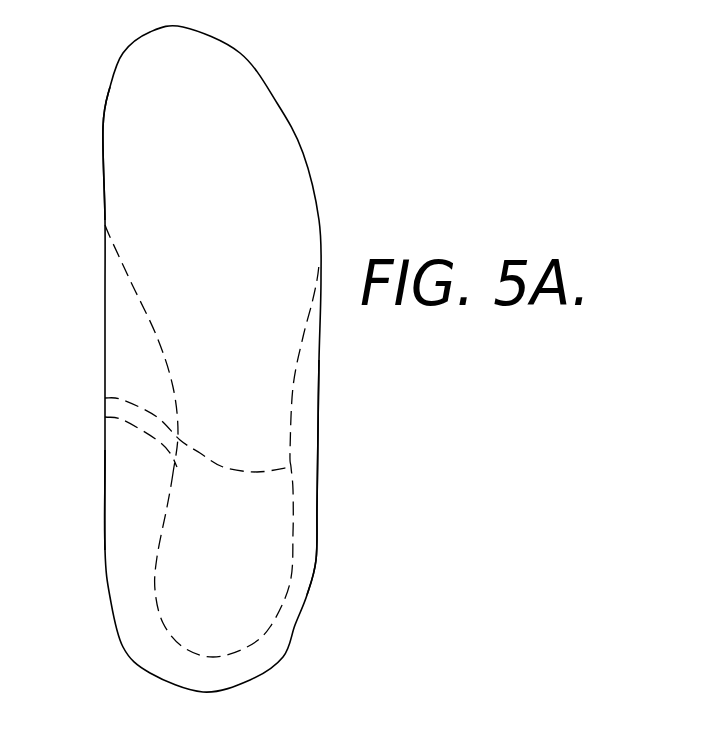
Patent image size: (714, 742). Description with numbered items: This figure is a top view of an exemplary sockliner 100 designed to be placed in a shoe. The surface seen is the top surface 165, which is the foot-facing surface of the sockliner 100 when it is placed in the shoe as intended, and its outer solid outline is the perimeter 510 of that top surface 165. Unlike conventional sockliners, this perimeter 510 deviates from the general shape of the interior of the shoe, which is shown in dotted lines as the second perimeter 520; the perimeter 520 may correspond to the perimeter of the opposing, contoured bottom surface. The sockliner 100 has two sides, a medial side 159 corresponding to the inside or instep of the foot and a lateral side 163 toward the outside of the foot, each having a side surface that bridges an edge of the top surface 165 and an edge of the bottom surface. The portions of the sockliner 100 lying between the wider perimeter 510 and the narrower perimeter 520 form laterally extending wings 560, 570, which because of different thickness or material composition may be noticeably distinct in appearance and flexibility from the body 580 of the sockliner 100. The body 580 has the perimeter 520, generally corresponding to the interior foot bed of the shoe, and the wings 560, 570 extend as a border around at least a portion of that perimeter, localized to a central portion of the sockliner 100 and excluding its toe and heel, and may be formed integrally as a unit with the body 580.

The sockliner 100 is at (307, 122).
The top surface 165 is at (113, 129).
The wing 570 is at (120, 335).
The second perimeter 520 is at (105, 398).
The medial side 159 is at (105, 490).
The wing 560 is at (315, 367).
The perimeter 510 is at (318, 427).
The lateral side 163 is at (315, 553).
The body 580 is at (250, 607).